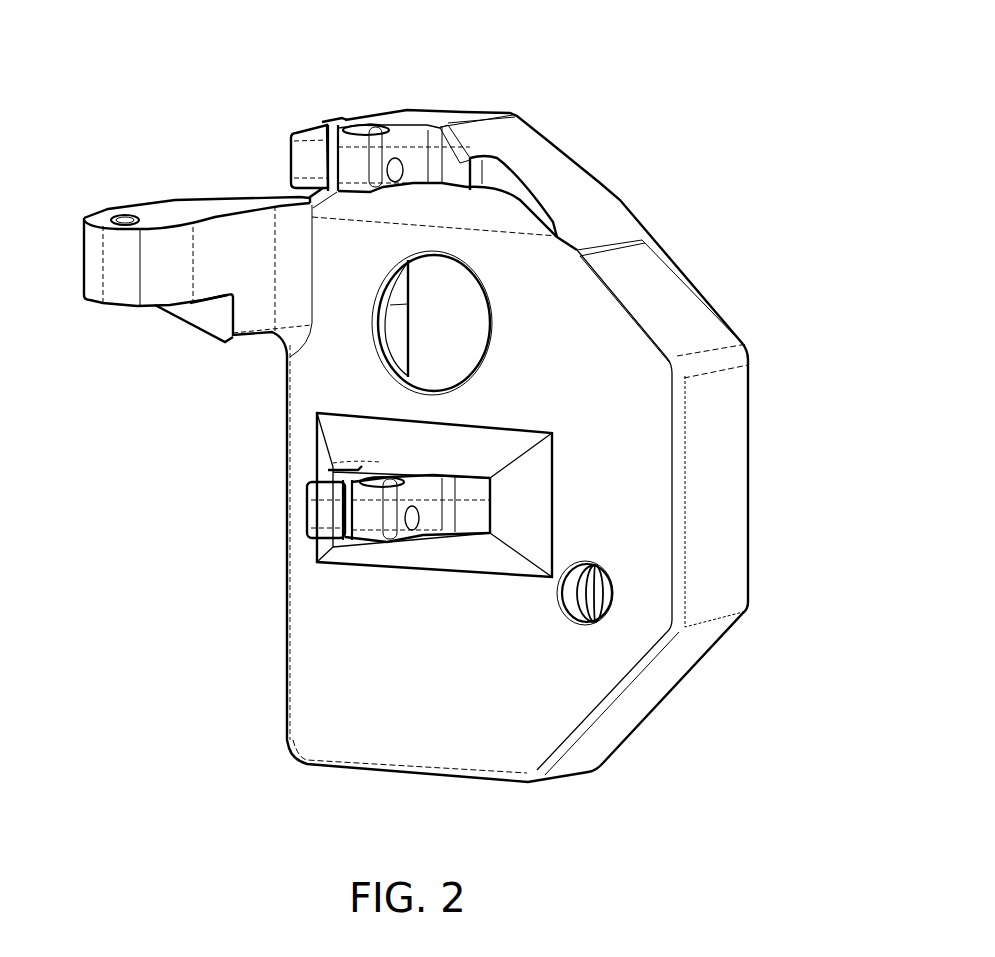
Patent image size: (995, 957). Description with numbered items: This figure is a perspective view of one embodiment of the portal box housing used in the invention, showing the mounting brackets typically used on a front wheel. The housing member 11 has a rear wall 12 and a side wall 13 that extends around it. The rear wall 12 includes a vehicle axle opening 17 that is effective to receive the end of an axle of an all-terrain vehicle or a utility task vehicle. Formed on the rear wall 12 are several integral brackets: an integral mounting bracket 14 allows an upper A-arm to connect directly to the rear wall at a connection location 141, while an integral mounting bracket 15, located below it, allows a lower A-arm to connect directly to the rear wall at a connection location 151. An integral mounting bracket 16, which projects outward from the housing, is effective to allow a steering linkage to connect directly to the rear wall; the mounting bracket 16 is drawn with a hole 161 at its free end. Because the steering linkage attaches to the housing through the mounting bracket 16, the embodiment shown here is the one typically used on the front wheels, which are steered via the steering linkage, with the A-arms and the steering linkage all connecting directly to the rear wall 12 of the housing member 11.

The housing member 11 is at (726, 85).
The rear wall 12 is at (305, 692).
The side wall 13 is at (668, 290).
The integral mounting bracket 14 is at (303, 162).
The connection location 141 is at (370, 117).
The integral mounting bracket 15 is at (317, 518).
The connection location 151 is at (330, 472).
The integral mounting bracket 16 is at (168, 246).
The mounting hole 161 is at (126, 213).
The vehicle axle opening 17 is at (420, 330).